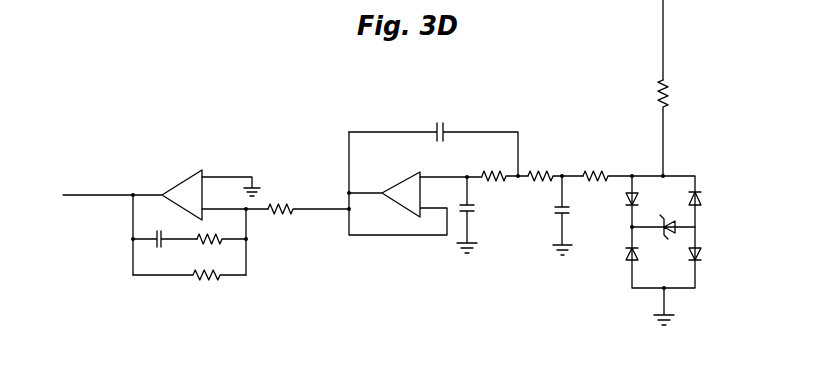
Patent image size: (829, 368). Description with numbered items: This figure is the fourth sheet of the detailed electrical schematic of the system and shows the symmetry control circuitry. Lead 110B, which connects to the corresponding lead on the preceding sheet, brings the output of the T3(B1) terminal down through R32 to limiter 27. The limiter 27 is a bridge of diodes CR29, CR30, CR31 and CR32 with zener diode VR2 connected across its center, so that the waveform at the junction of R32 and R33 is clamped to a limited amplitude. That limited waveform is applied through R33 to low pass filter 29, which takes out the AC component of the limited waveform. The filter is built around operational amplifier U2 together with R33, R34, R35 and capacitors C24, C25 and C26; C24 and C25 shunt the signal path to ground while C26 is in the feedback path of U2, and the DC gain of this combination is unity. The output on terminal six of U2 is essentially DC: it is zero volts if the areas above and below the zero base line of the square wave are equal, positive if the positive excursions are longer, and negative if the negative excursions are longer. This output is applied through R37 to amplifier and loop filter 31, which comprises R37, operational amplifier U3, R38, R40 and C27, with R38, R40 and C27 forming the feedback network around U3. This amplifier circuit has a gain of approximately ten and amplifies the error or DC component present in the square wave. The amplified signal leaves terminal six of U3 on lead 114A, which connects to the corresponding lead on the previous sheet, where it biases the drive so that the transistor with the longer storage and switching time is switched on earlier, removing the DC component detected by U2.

The lead 114A is at (82, 195).
The amplifier and loop filter 31 is at (230, 237).
The low pass filter 29 is at (437, 196).
The limiter 27 is at (681, 223).
The lead 110B is at (663, 26).
The operational amplifier U3 is at (199, 187).
The operational amplifier U2 is at (397, 183).
The resistor R37 is at (308, 197).
The resistor R38 is at (216, 243).
The resistor R40 is at (222, 265).
The capacitor C27 is at (162, 250).
The capacitor C26 is at (433, 135).
The capacitor C25 is at (484, 215).
The capacitor C24 is at (580, 215).
The resistor R35 is at (502, 166).
The resistor R34 is at (555, 166).
The resistor R33 is at (607, 166).
The resistor R32 is at (685, 128).
The diode CR29 is at (721, 199).
The diode CR30 is at (721, 256).
The diode CR31 is at (641, 197).
The diode CR32 is at (614, 265).
The zener diode VR2 is at (660, 234).